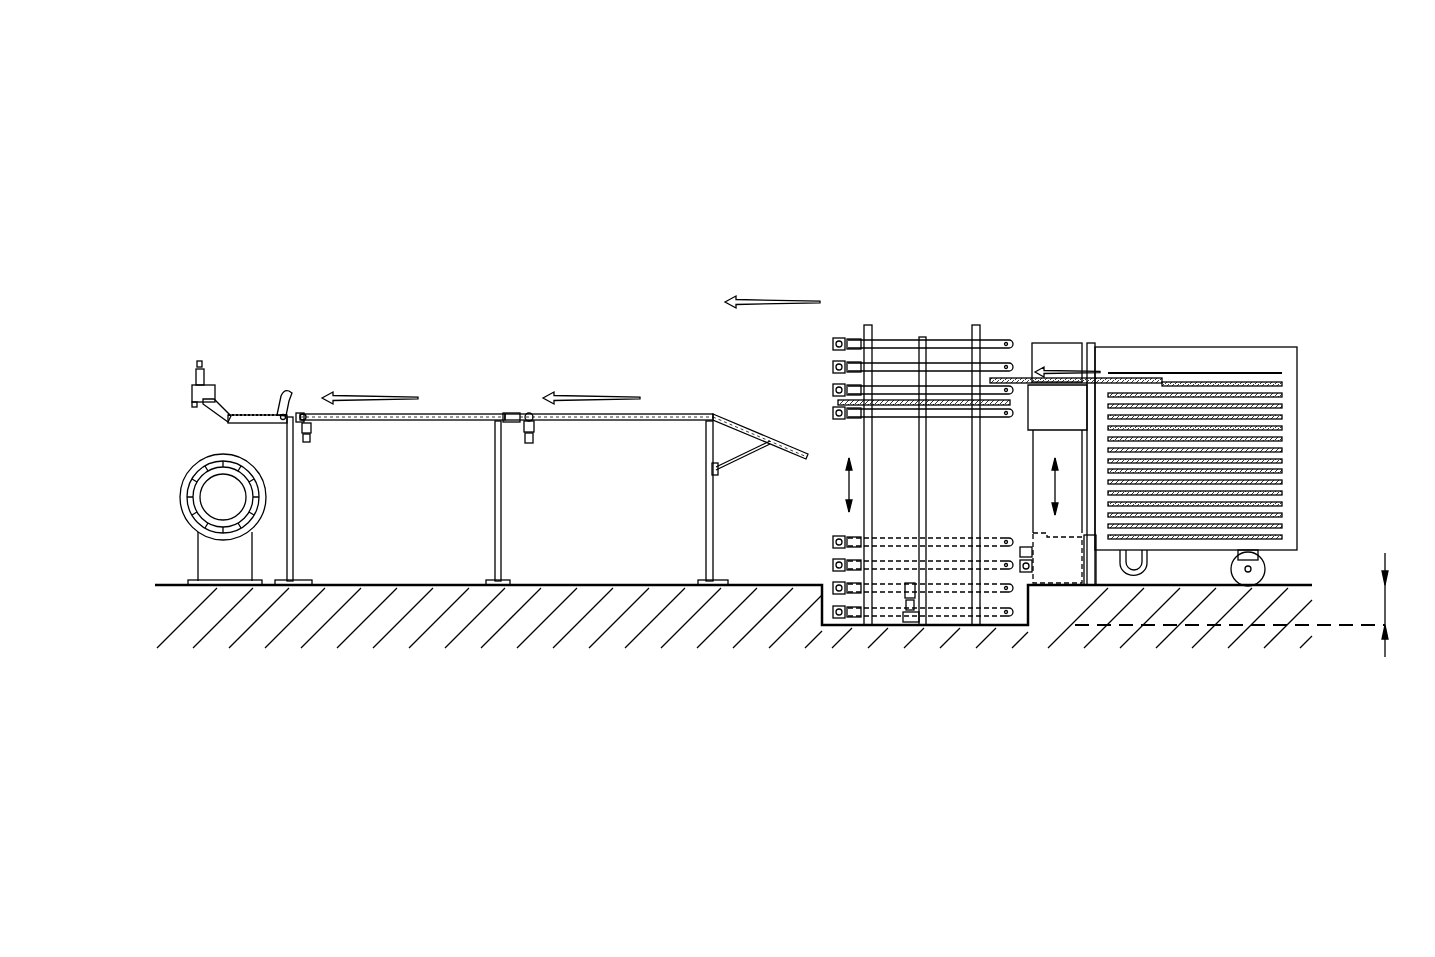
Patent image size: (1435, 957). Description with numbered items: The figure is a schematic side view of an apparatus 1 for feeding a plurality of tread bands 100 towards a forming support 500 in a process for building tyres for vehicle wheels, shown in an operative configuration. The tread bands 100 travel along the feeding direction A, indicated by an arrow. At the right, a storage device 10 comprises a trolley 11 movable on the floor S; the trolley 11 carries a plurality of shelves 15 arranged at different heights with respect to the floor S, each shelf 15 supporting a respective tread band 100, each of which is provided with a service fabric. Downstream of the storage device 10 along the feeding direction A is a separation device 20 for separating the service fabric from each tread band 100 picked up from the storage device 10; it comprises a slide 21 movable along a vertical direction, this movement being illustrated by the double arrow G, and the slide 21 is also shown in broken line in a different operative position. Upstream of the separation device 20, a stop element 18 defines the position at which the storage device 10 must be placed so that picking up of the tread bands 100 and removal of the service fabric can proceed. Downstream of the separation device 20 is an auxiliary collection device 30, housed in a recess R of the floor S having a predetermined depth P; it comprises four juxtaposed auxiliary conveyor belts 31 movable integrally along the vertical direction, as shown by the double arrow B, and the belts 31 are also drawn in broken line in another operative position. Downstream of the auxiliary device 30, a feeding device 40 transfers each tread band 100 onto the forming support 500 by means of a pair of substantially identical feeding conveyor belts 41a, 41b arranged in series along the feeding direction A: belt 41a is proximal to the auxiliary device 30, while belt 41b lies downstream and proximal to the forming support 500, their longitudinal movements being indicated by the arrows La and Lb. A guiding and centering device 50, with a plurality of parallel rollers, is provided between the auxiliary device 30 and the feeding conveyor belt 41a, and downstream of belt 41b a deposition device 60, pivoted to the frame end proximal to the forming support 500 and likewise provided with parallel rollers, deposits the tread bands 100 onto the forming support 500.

The apparatus 1 is at (637, 105).
The storage device 10 is at (1213, 312).
The trolley 11 is at (1297, 437).
The shelf 15 is at (1261, 356).
The stop element 18 is at (1093, 560).
The separation device 20 is at (1030, 302).
The slide 21 is at (1063, 355).
The auxiliary collection device 30 is at (905, 251).
The auxiliary conveyor belt 31 is at (887, 337).
The feeding device 40 is at (502, 286).
The feeding conveyor belt 41a is at (663, 397).
The feeding conveyor belt 41b is at (438, 396).
The guiding and centering device 50 is at (764, 407).
The deposition device 60 is at (248, 381).
The tread band 100 is at (947, 400).
The forming support 500 is at (173, 447).
The feeding direction A is at (745, 298).
The double arrow B is at (848, 485).
The double arrow G is at (1054, 483).
The arrow La is at (560, 393).
The arrow Lb is at (345, 395).
The depth P is at (1241, 605).
The recess R is at (1025, 620).
The floor S is at (1293, 585).